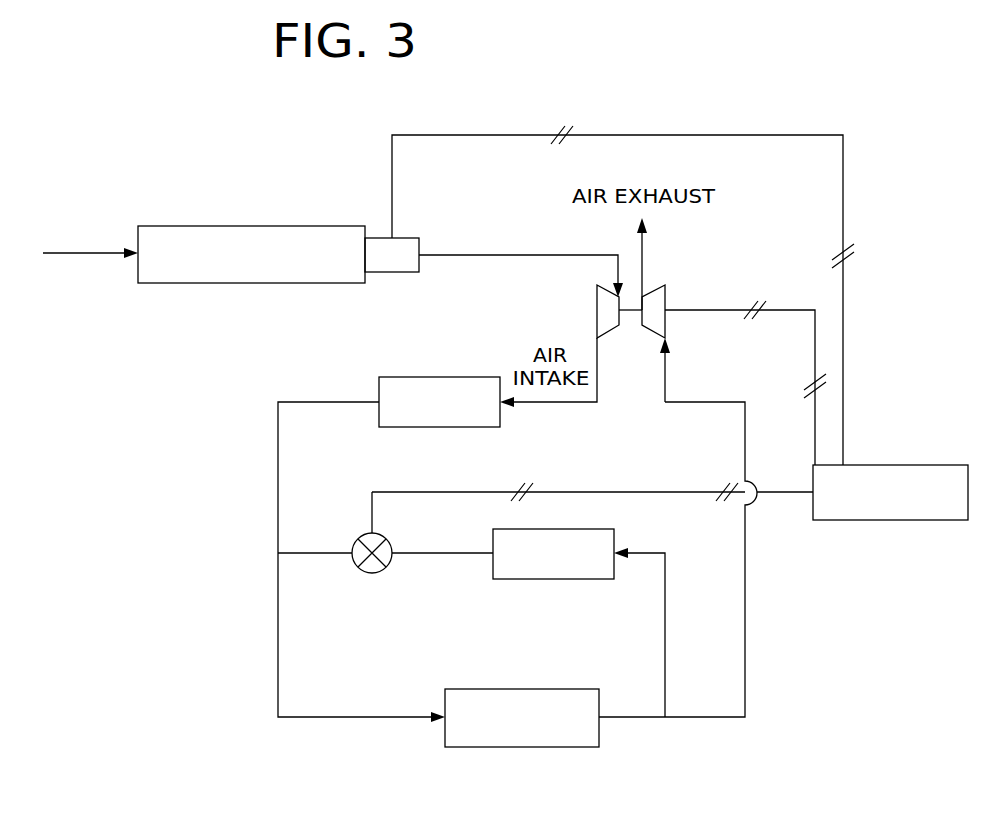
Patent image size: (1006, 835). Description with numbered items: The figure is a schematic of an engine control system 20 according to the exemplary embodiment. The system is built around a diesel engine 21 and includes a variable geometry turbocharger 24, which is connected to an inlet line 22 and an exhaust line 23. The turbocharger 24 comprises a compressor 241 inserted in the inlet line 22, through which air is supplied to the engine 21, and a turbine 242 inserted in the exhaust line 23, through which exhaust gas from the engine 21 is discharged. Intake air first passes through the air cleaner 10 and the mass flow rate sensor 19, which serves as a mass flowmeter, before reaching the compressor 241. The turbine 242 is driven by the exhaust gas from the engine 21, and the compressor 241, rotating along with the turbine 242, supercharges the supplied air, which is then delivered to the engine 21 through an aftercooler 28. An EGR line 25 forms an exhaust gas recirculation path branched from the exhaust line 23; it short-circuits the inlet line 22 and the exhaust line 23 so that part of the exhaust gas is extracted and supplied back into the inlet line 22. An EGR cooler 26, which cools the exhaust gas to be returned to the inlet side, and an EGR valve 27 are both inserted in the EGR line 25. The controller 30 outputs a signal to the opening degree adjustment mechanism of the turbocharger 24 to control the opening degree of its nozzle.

The air cleaner 10 is at (284, 226).
The mass flow rate sensor 19 is at (393, 272).
The engine control system 20 is at (498, 80).
The diesel engine 21 is at (523, 747).
The inlet line 22 is at (348, 717).
The exhaust line 23 is at (715, 717).
The variable geometry turbocharger 24 is at (591, 342).
The compressor 241 is at (610, 338).
The turbine 242 is at (655, 338).
The EGR line 25 is at (665, 633).
The EGR cooler 26 is at (556, 579).
The EGR valve 27 is at (372, 573).
The aftercooler 28 is at (448, 377).
The controller 30 is at (938, 465).